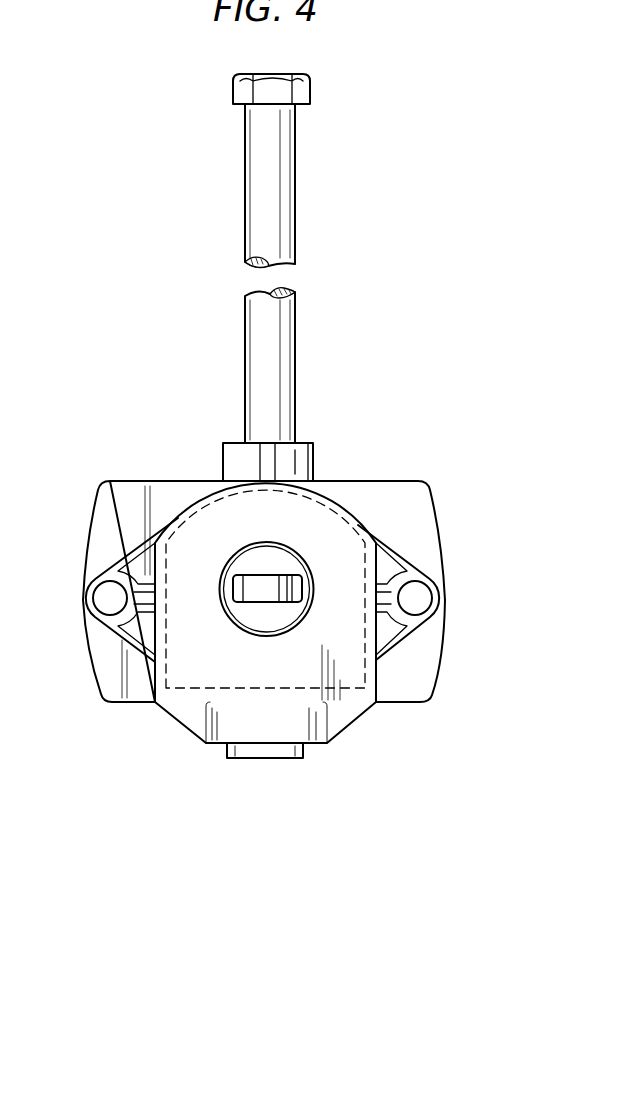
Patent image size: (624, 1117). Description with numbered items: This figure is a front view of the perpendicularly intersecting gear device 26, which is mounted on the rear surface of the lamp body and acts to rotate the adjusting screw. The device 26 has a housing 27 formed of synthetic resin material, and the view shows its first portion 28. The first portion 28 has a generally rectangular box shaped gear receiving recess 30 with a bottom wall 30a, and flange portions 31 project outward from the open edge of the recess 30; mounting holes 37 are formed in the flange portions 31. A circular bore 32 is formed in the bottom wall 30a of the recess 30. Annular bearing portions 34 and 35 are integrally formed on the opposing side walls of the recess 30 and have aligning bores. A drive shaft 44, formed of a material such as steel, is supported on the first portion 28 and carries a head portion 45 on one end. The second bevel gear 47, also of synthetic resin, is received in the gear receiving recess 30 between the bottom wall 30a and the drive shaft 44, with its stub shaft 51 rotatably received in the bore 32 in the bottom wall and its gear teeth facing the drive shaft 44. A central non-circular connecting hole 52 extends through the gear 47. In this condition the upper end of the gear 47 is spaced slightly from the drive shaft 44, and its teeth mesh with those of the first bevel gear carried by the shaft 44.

The perpendicularly intersecting gear device 26 is at (467, 341).
The housing 27 is at (405, 478).
The first portion 28 is at (440, 544).
The gear receiving recess 30 is at (170, 680).
The bottom wall 30a is at (350, 672).
The flange portions 31 is at (95, 541).
The circular bore 32 is at (297, 562).
The annular bearing portion 34 is at (218, 745).
The annular bearing portion 35 is at (313, 456).
The mounting holes 37 is at (98, 595).
The drive shaft 44 is at (296, 340).
The head portion 45 is at (306, 88).
The second bevel gear 47 is at (247, 568).
The stub shaft 51 is at (246, 612).
The central non-circular connecting hole 52 is at (261, 580).